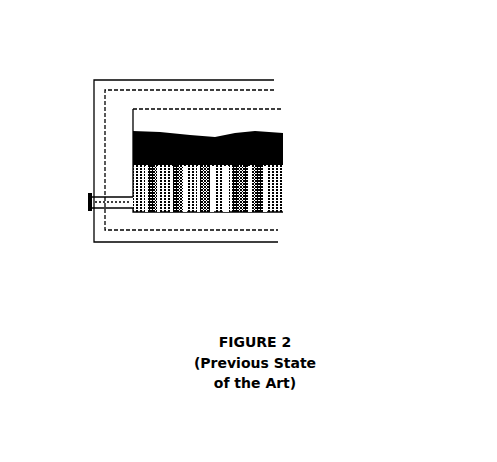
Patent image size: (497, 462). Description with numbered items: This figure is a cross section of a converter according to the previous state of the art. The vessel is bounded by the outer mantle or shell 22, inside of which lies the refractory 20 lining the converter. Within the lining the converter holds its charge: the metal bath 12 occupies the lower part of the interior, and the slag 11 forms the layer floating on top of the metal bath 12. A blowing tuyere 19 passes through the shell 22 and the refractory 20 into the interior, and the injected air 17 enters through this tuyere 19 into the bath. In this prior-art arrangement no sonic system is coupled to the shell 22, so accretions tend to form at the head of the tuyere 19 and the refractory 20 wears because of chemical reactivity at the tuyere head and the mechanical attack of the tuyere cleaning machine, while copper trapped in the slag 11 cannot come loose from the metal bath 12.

The slag 11 is at (288, 151).
The metal bath 12 is at (288, 190).
The inlet flow 17 is at (85, 202).
The blowing tuyere 19 is at (112, 210).
The refractory 20 is at (269, 102).
The mantle or shell 22 is at (282, 84).